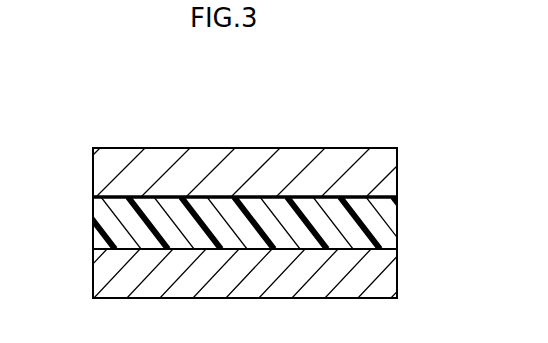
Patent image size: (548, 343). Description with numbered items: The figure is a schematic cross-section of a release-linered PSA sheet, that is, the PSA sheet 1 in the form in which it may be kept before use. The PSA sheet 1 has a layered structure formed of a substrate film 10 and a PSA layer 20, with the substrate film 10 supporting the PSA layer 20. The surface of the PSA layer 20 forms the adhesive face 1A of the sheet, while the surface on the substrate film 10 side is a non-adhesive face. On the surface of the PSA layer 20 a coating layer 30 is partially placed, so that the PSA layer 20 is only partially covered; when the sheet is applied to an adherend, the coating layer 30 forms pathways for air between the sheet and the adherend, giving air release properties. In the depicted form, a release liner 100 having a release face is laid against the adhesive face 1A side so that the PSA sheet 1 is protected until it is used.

The PSA sheet 1 is at (107, 112).
The adhesive face 1A is at (220, 197).
The substrate film 10 is at (398, 278).
The PSA layer 20 is at (398, 226).
The coating layer 30 is at (107, 196).
The release liner 100 is at (398, 180).